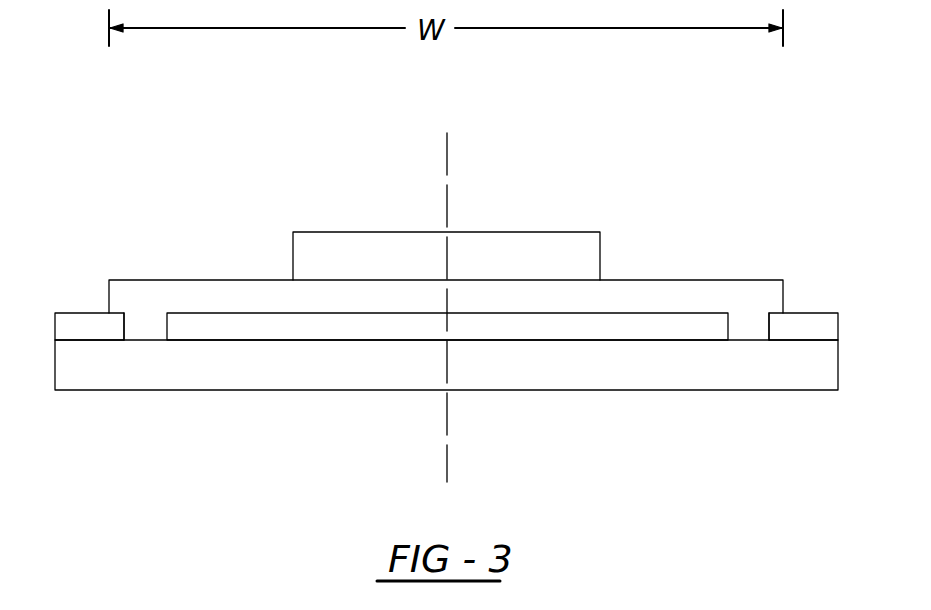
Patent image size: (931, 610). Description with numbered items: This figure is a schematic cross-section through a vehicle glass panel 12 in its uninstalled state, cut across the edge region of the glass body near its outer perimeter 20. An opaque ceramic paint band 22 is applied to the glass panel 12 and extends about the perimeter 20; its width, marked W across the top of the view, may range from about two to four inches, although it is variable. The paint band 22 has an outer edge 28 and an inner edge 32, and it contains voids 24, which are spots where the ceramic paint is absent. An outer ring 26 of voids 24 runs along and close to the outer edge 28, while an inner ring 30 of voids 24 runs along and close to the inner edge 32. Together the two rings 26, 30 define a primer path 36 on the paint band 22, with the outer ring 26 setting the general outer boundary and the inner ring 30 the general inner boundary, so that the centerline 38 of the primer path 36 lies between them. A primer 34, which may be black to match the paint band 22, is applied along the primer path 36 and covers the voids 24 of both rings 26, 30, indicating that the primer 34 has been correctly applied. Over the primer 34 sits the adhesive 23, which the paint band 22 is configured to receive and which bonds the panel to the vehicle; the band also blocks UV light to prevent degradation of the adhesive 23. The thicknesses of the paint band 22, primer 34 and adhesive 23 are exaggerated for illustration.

The glass panel 12 is at (678, 376).
The outer perimeter 20 is at (55, 365).
The paint band 22 is at (822, 326).
The adhesive 23 is at (509, 248).
The voids 24 is at (167, 326).
The outer ring 26 is at (157, 348).
The outer edge 28 is at (72, 313).
The inner ring 30 is at (745, 348).
The inner edge 32 is at (820, 313).
The primer 34 is at (649, 293).
The primer path 36 is at (558, 348).
The centerline 38 is at (447, 170).